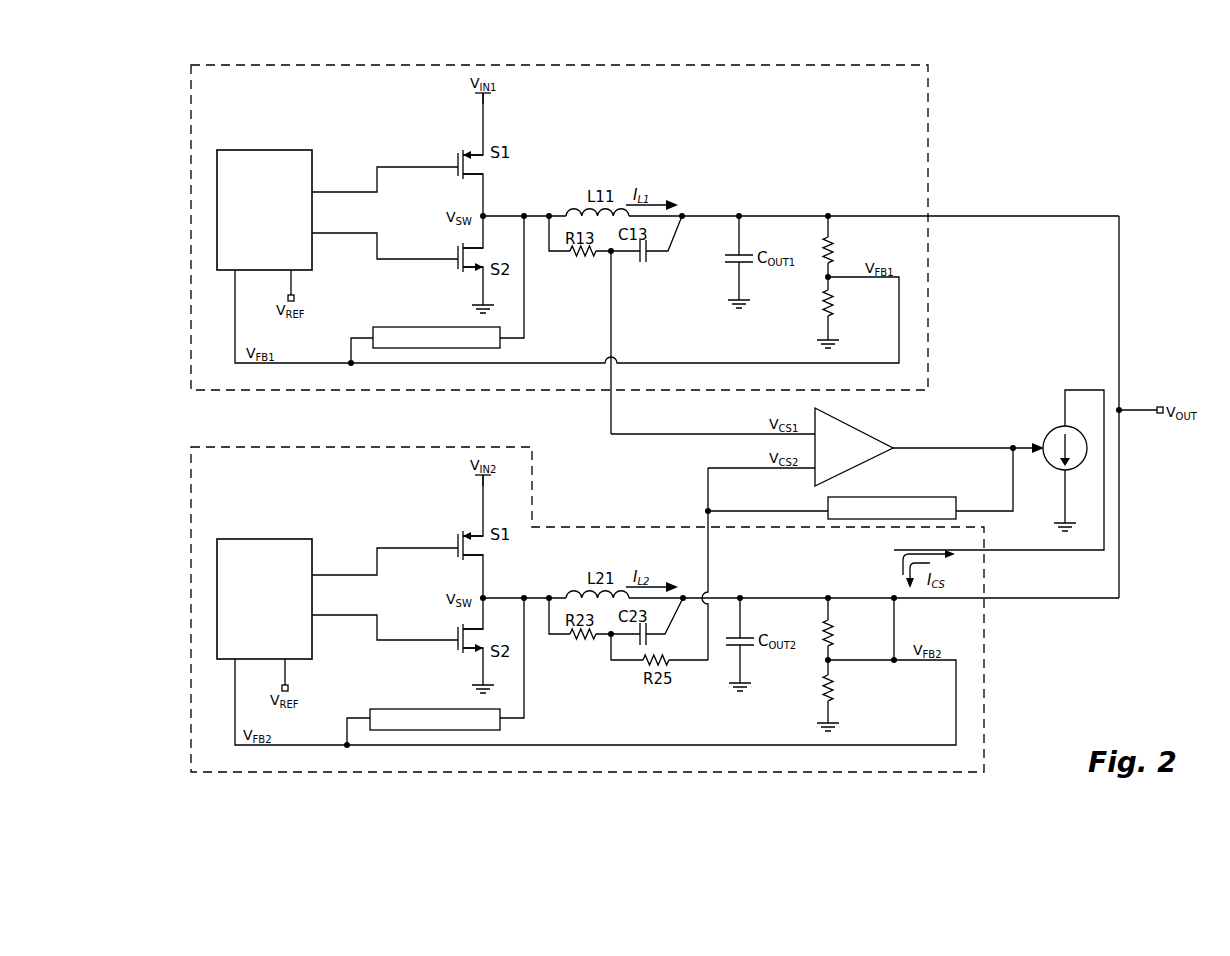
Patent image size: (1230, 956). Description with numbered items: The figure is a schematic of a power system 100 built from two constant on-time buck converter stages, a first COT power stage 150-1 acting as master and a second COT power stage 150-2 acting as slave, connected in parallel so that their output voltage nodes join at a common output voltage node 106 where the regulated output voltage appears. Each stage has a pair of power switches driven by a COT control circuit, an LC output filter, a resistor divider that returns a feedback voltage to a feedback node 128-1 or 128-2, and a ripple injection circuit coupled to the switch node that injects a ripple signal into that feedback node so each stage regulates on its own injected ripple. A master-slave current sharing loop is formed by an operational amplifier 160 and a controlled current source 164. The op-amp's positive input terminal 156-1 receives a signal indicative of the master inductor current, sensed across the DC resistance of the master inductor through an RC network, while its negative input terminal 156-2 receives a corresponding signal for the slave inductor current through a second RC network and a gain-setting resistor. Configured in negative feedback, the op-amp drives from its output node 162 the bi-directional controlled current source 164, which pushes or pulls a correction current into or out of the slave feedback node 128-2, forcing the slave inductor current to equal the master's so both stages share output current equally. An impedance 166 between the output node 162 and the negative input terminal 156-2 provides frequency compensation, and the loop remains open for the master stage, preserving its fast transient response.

The power system 100 is at (1038, 82).
The common output voltage node 106 is at (1119, 281).
The feedback node 128-1 is at (826, 278).
The feedback node 128-2 is at (923, 668).
The first COT power stage 150-1 is at (878, 65).
The second COT power stage 150-2 is at (532, 458).
The positive input terminal 156-1 is at (609, 311).
The negative input terminal 156-2 is at (707, 552).
The operational amplifier 160 is at (849, 427).
The output node of the op-amp 162 is at (941, 448).
The controlled current source 164 is at (1050, 432).
The impedance 166 is at (922, 497).